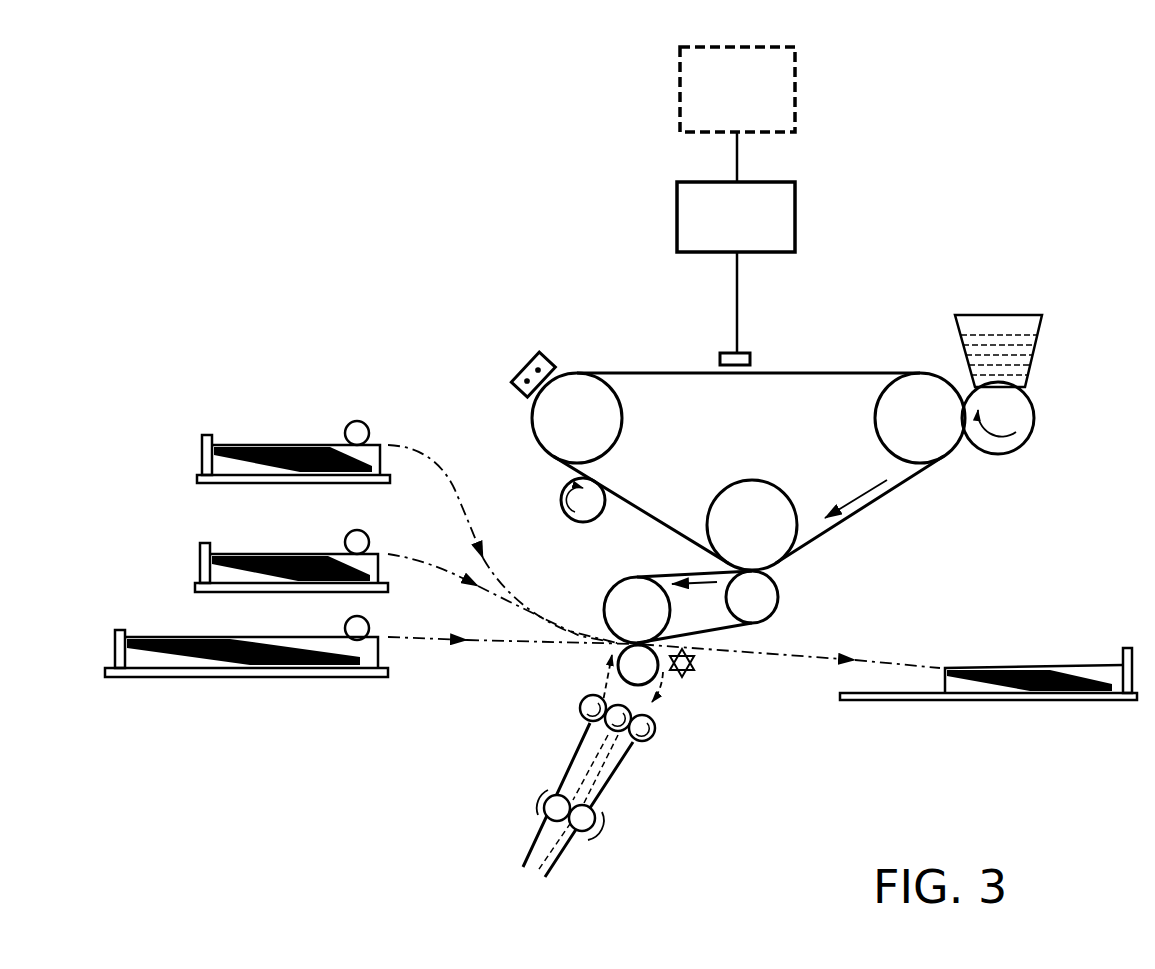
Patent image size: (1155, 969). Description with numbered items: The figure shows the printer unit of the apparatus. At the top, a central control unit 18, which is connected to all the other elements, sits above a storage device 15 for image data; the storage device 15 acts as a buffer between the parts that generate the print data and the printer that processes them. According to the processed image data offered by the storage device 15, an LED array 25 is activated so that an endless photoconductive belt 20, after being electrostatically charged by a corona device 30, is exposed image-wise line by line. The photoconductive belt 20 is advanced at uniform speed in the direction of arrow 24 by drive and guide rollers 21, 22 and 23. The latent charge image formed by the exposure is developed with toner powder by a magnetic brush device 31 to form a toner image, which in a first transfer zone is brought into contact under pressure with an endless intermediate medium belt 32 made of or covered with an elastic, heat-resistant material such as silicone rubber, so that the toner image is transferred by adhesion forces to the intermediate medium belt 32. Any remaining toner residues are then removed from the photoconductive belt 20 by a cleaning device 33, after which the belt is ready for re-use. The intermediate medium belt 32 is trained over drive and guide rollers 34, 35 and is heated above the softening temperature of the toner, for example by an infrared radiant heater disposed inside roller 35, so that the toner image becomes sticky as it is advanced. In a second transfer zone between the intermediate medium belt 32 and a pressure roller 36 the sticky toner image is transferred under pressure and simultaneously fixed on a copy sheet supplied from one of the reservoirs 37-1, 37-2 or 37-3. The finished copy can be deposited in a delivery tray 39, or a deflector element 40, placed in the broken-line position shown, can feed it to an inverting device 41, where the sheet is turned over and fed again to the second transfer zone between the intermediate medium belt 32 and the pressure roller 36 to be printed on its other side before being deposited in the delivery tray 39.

The central control unit 18 is at (733, 45).
The storage device 15 is at (795, 203).
The LED array 25 is at (748, 353).
The photoconductive belt 20 is at (688, 372).
The corona device 30 is at (527, 360).
The drive and guide roller 23 is at (624, 413).
The drive and guide roller 21 is at (890, 405).
The magnetic brush device 31 is at (1025, 405).
The drive and guide roller 22 is at (752, 492).
The arrow 24 is at (855, 495).
The cleaning device 33 is at (565, 490).
The intermediate medium belt 32 is at (668, 572).
The drive and guide roller 35 is at (615, 597).
The drive and guide roller 34 is at (763, 595).
The pressure roller 36 is at (630, 667).
The deflector element 40 is at (700, 673).
The inverting device 41 is at (615, 785).
The reservoir 37-1 is at (268, 437).
The reservoir 37-2 is at (187, 557).
The reservoir 37-3 is at (168, 632).
The delivery tray 39 is at (1030, 660).